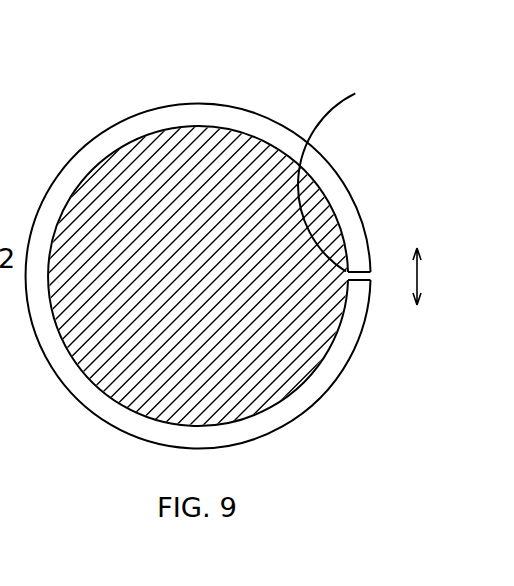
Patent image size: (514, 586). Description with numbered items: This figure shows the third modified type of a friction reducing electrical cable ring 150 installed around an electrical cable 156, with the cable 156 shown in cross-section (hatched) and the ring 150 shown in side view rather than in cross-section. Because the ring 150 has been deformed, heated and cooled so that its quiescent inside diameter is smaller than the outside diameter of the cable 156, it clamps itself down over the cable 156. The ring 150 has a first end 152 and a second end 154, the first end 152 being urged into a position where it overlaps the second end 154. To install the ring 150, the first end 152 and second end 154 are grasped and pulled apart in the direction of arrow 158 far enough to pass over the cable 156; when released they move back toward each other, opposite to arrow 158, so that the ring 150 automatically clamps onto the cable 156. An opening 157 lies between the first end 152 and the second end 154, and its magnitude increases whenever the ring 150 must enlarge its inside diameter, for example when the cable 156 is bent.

The third modified type of a friction reducing electrical cable ring 150 is at (267, 88).
The first end 152 is at (373, 258).
The second end 154 is at (372, 293).
The electrical cable 156 is at (302, 174).
The opening 157 is at (351, 172).
The arrow 158 is at (422, 277).